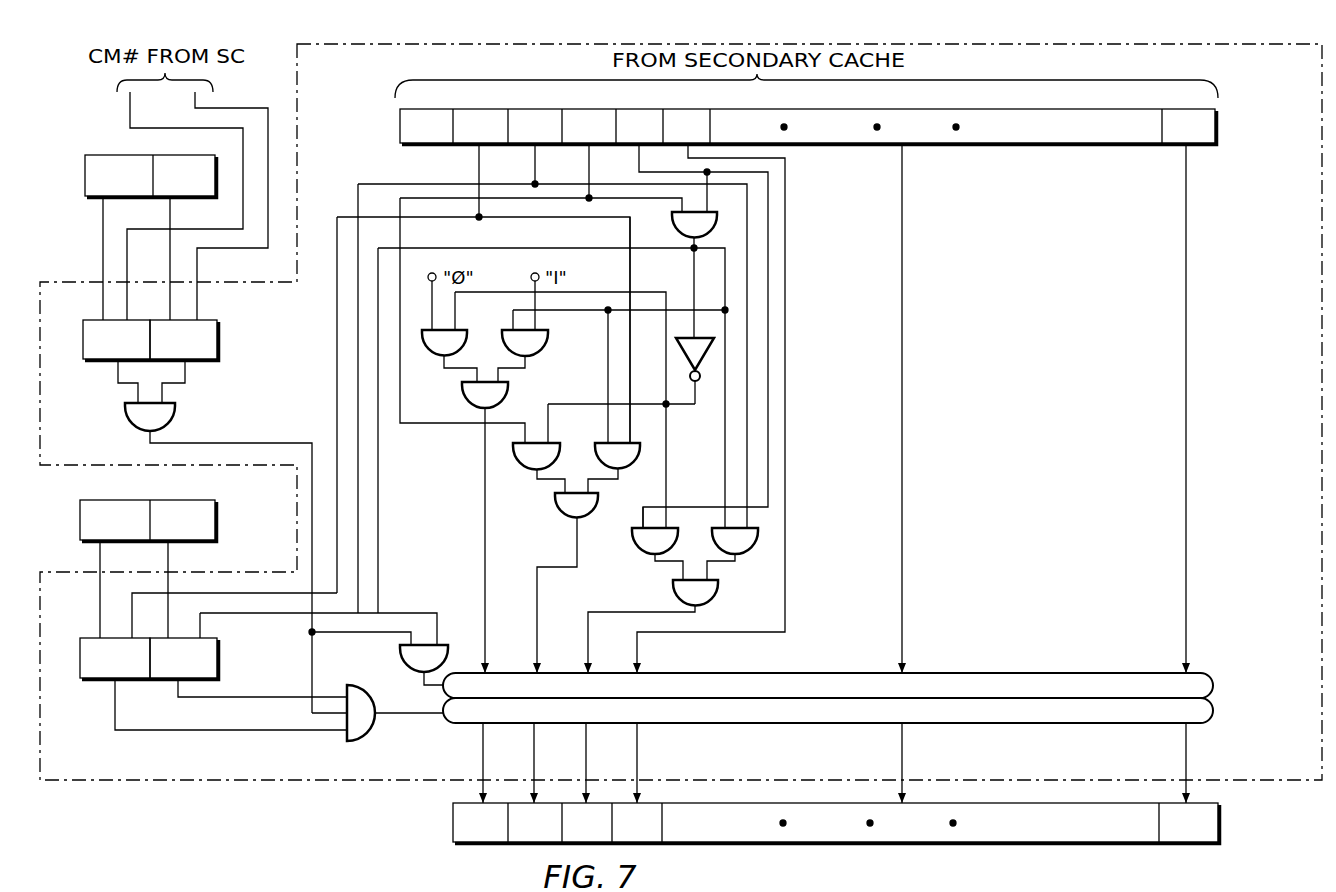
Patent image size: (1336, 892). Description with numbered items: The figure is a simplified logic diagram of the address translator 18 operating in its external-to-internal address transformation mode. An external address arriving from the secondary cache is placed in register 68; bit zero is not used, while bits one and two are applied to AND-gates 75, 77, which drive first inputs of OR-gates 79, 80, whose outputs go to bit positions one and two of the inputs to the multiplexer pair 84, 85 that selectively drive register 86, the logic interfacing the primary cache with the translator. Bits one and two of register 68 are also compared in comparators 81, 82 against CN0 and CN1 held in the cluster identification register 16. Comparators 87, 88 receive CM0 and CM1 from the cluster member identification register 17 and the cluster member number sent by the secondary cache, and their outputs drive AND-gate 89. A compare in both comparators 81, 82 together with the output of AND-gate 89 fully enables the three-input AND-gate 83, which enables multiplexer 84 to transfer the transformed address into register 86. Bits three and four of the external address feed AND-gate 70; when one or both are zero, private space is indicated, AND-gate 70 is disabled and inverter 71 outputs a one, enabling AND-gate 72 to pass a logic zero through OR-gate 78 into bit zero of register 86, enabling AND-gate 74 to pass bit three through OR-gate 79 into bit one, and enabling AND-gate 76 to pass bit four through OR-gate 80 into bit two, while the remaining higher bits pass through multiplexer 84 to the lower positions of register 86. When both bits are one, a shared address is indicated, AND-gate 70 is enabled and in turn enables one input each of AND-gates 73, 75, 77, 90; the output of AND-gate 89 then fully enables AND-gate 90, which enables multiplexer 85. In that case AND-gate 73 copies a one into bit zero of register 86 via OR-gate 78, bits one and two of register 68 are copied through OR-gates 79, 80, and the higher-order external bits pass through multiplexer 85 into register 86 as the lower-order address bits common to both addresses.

The first two-bit identification register 16 is at (114, 494).
The second two-bit identification register 17 is at (106, 151).
The address translator 18 is at (348, 82).
The register 68 is at (397, 124).
The AND-gate 70 is at (730, 228).
The inverter 71 is at (705, 378).
The AND-gate 72 is at (425, 346).
The AND-gate 73 is at (545, 346).
The AND-gate 74 is at (516, 452).
The AND-gate 75 is at (642, 452).
The AND-gate 76 is at (634, 544).
The AND-gate 77 is at (756, 544).
The OR-gate 78 is at (463, 392).
The OR-gate 79 is at (556, 506).
The OR-gate 80 is at (674, 590).
The comparator 81 is at (100, 680).
The comparator 82 is at (168, 680).
The AND-gate 83 is at (375, 735).
The multiplexer 84 is at (1213, 706).
The multiplexer 85 is at (1213, 686).
The register 86 is at (1224, 821).
The comparator 87 is at (97, 360).
The comparator 88 is at (210, 360).
The AND-gate 89 is at (125, 410).
The AND-gate 90 is at (400, 648).